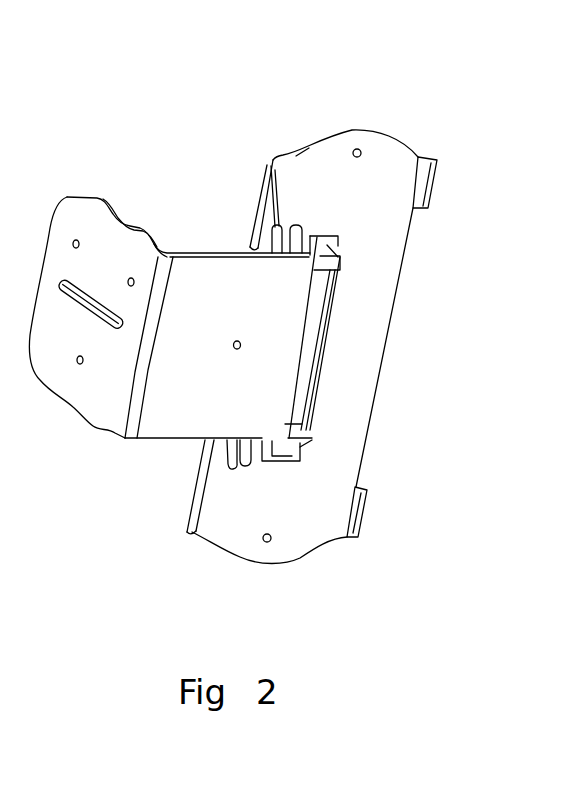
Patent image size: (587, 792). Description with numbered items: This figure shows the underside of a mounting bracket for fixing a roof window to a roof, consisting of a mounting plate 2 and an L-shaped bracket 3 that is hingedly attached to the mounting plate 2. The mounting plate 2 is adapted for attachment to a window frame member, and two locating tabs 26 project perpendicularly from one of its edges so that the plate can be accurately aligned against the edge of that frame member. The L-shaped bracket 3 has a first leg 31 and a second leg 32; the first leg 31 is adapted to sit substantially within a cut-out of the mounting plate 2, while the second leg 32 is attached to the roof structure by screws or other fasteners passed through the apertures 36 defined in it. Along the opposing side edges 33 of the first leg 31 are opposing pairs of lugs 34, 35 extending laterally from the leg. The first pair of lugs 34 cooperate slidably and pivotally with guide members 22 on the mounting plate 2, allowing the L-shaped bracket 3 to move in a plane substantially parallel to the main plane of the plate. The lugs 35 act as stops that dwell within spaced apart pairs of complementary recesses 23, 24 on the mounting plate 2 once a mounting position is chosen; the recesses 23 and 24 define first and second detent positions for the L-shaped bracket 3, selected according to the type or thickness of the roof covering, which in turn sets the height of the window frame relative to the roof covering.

The mounting plate 2 is at (373, 177).
The guide members 22 is at (338, 238).
The recesses 23 is at (295, 225).
The recesses 24 is at (277, 225).
The locating tabs 26 is at (437, 170).
The L-shaped bracket 3 is at (131, 428).
The first leg 31 is at (183, 417).
The second leg 32 is at (72, 387).
The opposing side edges 33 is at (207, 253).
The lugs 34 is at (313, 236).
The lugs 35 is at (272, 240).
The apertures 36 is at (74, 238).